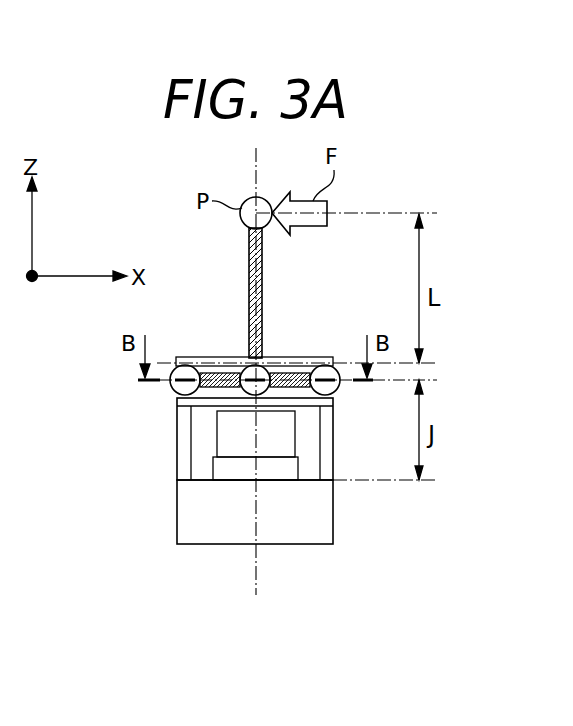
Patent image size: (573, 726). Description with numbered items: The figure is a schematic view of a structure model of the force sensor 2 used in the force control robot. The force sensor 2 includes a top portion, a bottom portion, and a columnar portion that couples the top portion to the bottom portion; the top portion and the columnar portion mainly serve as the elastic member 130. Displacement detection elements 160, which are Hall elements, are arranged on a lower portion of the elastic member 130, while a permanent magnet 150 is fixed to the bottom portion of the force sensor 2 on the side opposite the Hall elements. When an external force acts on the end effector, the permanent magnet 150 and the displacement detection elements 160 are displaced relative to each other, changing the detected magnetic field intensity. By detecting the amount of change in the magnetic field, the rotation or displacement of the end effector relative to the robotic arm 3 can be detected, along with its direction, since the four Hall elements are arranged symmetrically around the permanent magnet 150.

The force sensor 2 is at (194, 491).
The robotic arm 3 is at (304, 533).
The elastic member 130 is at (214, 399).
The permanent magnet 150 is at (219, 447).
The displacement detection elements 160 is at (187, 364).